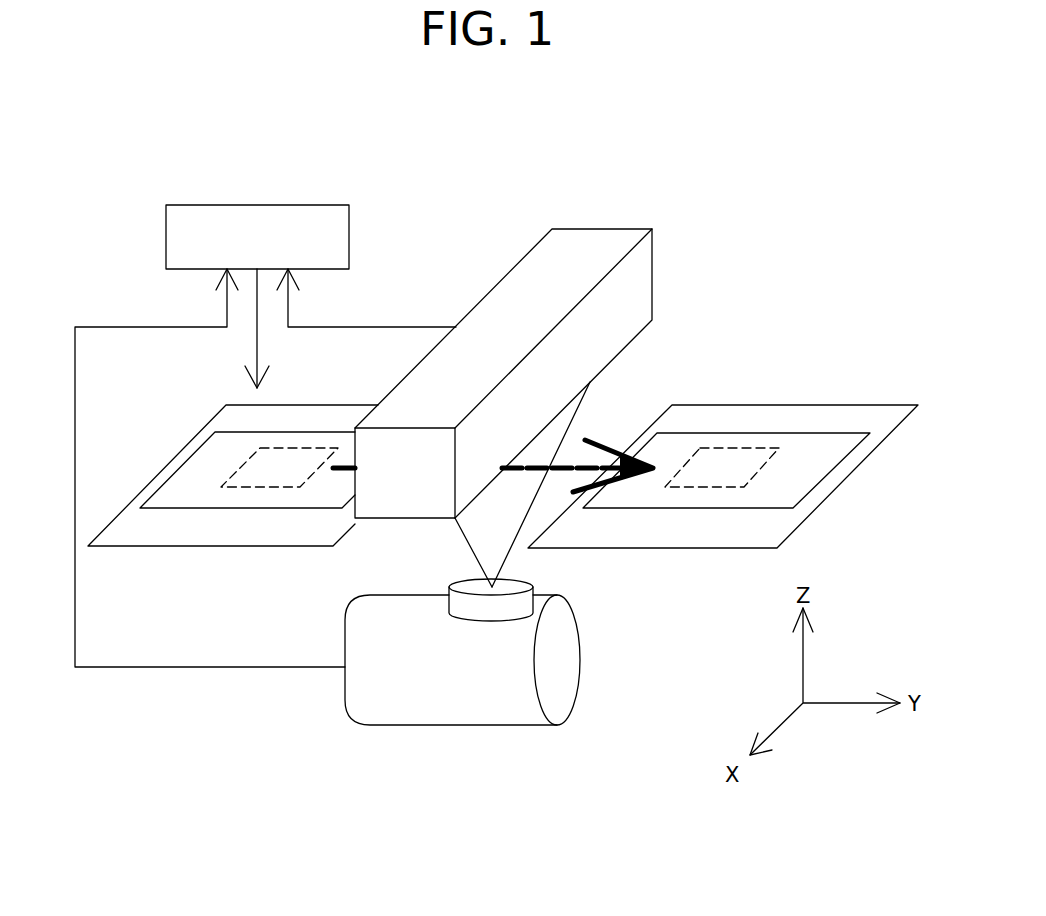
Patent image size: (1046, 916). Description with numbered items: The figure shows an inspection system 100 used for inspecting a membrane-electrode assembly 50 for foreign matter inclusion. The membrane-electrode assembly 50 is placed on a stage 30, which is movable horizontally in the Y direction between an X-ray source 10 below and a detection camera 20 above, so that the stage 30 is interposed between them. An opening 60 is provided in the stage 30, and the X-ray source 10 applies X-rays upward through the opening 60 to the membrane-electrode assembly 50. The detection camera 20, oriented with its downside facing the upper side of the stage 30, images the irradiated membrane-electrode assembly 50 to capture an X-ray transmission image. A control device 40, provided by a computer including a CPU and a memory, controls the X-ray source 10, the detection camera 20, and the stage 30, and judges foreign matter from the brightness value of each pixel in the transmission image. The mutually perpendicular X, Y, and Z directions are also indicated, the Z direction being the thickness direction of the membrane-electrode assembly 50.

The inspection system 100 is at (772, 215).
The X-ray source 10 is at (360, 637).
The detection camera 20 is at (593, 245).
The stage 30 is at (810, 420).
The control device 40 is at (349, 238).
The membrane-electrode assembly 50 is at (803, 468).
The opening 60 is at (703, 487).